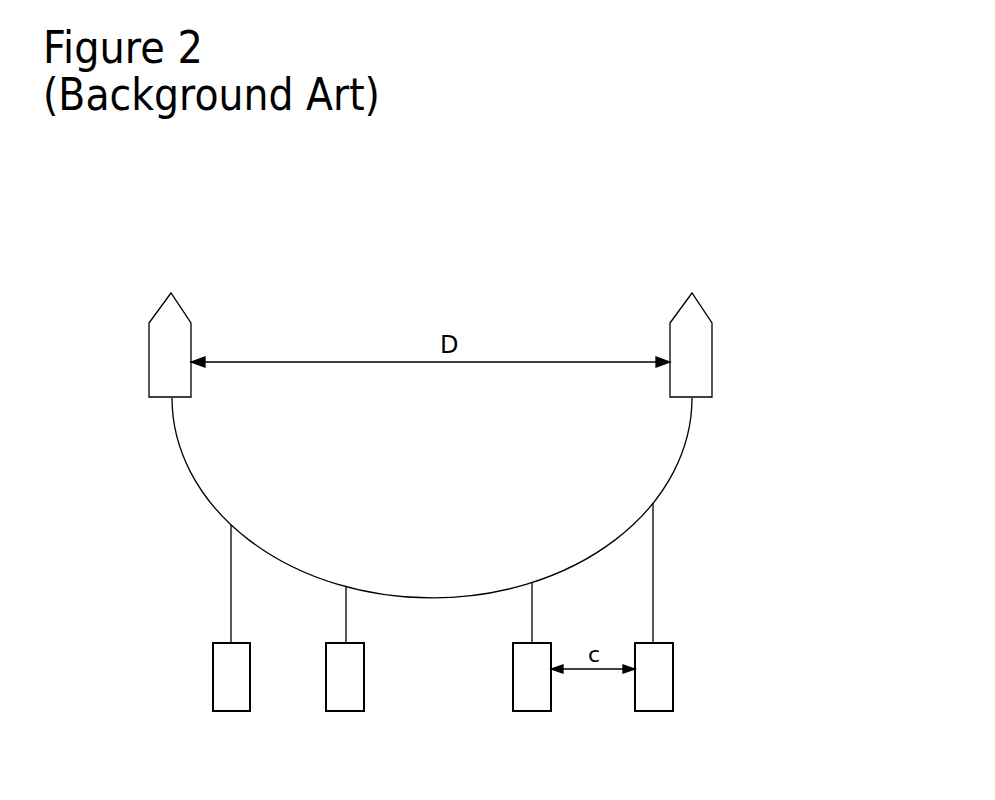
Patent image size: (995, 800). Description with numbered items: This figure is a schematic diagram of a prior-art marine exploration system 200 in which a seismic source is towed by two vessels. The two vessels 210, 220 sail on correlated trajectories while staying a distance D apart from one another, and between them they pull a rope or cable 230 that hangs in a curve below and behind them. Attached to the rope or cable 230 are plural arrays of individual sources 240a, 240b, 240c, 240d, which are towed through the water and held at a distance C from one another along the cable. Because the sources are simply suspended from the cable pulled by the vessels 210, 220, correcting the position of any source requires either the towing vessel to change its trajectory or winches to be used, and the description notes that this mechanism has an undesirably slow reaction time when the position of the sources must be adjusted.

The marine exploration system 200 is at (468, 183).
The vessel 210 is at (175, 332).
The vessel 220 is at (698, 330).
The rope or cable 230 is at (408, 597).
The array of individual sources 240a is at (233, 695).
The array of individual sources 240b is at (350, 690).
The array of individual sources 240c is at (535, 695).
The array of individual sources 240d is at (658, 690).